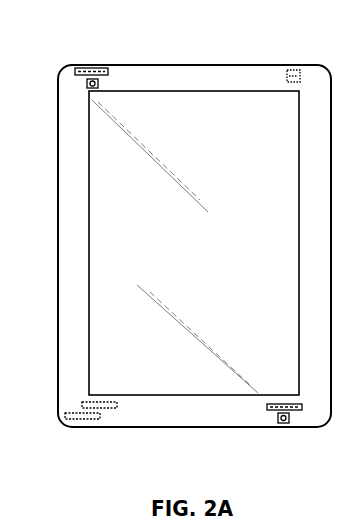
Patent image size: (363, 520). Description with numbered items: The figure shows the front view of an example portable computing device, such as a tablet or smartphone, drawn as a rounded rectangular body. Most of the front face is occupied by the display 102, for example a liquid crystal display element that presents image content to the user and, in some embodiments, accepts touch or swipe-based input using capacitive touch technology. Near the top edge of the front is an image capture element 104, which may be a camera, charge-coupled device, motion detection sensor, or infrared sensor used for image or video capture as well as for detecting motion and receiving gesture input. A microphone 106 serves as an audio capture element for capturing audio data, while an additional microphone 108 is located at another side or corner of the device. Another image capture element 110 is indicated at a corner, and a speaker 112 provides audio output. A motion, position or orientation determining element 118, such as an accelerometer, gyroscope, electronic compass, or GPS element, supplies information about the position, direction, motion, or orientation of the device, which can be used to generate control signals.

The display 102 is at (89, 180).
The image capture element 104 is at (87, 82).
The microphone 106 is at (104, 70).
The microphone 108 is at (300, 411).
The image capture element 110 is at (289, 70).
The speaker 112 is at (105, 409).
The motion, position or orientation determining element 118 is at (80, 420).